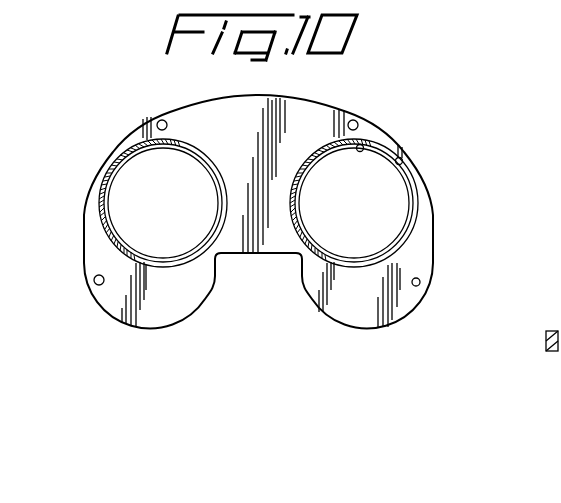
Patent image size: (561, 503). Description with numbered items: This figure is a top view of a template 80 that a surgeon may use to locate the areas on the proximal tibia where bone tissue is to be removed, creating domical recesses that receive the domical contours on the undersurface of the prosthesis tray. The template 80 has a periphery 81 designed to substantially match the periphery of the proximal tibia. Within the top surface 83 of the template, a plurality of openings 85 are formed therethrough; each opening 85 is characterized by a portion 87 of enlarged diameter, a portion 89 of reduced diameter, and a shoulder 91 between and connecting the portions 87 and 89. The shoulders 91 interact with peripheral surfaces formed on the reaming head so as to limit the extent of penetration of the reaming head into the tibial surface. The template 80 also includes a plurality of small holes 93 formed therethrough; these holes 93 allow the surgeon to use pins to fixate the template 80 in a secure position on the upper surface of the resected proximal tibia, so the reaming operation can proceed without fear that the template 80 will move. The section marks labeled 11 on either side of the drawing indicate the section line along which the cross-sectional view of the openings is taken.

The template 80 is at (404, 64).
The periphery 81 is at (168, 108).
The top surface 83 is at (292, 110).
The openings 85 is at (115, 206).
The portion of enlarged diameter 87 is at (396, 160).
The portion of reduced diameter 89 is at (376, 142).
The shoulder 91 is at (413, 183).
The small holes 93 is at (103, 274).
The section line 11- 11 is at (44, 252).